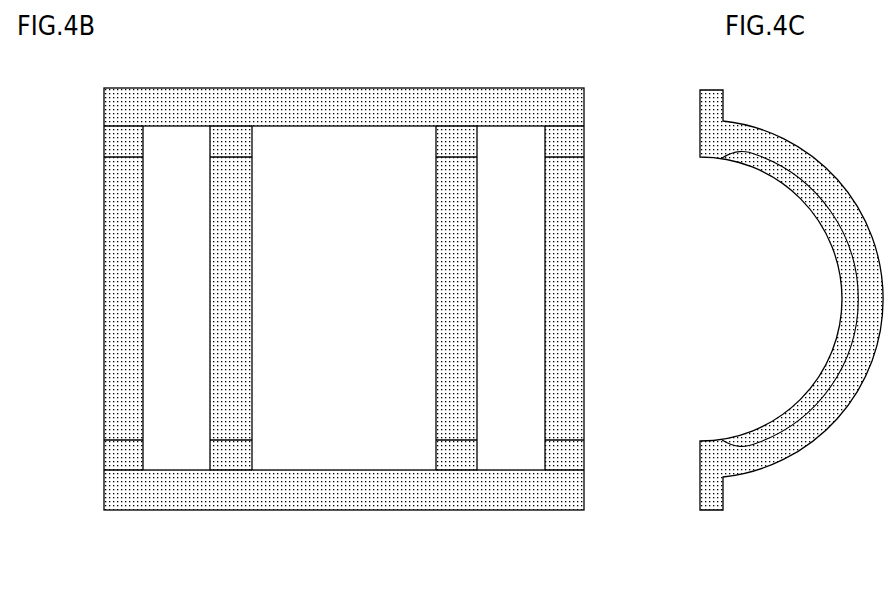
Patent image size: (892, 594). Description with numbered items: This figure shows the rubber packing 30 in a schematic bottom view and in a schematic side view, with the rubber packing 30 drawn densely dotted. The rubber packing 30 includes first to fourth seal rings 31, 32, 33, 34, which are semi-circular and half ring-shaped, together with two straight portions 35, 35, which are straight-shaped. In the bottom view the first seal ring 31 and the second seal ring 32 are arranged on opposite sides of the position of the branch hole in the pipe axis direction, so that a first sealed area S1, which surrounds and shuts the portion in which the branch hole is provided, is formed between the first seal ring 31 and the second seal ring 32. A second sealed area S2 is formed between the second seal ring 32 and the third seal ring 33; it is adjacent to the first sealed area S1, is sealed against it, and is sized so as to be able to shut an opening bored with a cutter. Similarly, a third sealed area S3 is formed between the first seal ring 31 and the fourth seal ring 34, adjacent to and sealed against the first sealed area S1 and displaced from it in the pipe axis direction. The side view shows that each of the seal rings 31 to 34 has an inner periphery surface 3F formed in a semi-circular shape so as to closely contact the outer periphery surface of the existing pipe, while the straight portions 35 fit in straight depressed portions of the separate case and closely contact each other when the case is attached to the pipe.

In FIG. 4B, the rubber packing 30 is at (277, 515).
In FIG. 4C, the rubber packing 30 is at (797, 273).
In FIG. 4B, the first seal ring 31 is at (232, 315).
In FIG. 4B, the second seal ring 32 is at (442, 338).
In FIG. 4B, the third seal ring 33 is at (568, 335).
In FIG. 4B, the fourth seal ring 34 is at (118, 320).
In FIG. 4B, the straight portion 35 is at (329, 105).
In FIG. 4C, the straight portion 35 is at (722, 98).
In FIG. 4C, the inner periphery surface 3F is at (807, 203).
In FIG. 4B, the first sealed area S1 is at (362, 223).
In FIG. 4B, the second sealed area S2 is at (527, 223).
In FIG. 4B, the third sealed area S3 is at (197, 223).